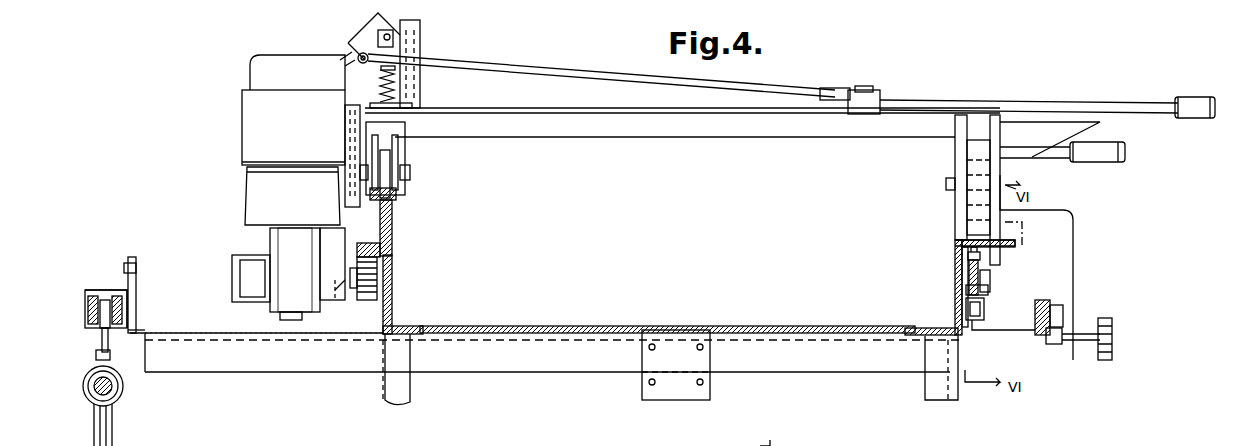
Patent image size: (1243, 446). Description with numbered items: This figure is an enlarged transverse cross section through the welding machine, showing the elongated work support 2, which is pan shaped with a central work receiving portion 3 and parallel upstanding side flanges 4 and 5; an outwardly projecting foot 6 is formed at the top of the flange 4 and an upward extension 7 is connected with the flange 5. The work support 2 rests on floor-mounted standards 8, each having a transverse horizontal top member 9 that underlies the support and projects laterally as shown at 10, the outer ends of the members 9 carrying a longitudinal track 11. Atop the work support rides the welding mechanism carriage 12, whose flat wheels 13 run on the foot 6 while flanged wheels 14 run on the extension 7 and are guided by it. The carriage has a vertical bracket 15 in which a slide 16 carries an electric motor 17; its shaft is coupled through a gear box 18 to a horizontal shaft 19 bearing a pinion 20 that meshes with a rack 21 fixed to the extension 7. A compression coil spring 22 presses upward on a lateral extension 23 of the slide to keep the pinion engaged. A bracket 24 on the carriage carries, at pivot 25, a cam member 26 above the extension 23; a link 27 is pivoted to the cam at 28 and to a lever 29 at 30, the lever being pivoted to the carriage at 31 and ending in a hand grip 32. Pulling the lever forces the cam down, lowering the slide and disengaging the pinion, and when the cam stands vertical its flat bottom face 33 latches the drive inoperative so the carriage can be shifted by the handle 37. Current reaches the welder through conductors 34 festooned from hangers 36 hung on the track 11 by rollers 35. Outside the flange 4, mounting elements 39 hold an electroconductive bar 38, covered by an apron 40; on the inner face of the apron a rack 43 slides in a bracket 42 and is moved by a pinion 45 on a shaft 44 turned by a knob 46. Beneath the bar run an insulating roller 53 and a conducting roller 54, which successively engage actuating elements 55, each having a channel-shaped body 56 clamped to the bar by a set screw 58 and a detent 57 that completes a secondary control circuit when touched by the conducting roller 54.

The work support 2 is at (962, 340).
The central work receiving portion 3 is at (612, 328).
The side flange 4 is at (960, 240).
The side flange 5 is at (392, 314).
The foot 6 is at (1020, 240).
The upward extension 7 is at (392, 217).
The standard 8 is at (390, 388).
The top member 9 is at (534, 366).
The lateral projection 10 is at (250, 366).
The track 11 is at (96, 288).
The carriage 12 is at (566, 112).
The flat wheel 13 is at (975, 166).
The flanged wheel 14 is at (398, 195).
The bracket 15 is at (352, 190).
The slide 16 is at (340, 218).
The electric motor 17 is at (252, 126).
The gear box 18 is at (270, 248).
The shaft 19 is at (342, 308).
The pinion 20 is at (378, 292).
The rack 21 is at (380, 254).
The compression coil spring 22 is at (400, 98).
The lateral extension 23 is at (400, 82).
The bracket 24 is at (420, 38).
The pivot 25 is at (378, 30).
The cam member 26 is at (347, 42).
The link 27 is at (612, 72).
The pivot 28 is at (358, 56).
The lever 29 is at (896, 92).
The pivot 30 is at (866, 86).
The pivot 31 is at (838, 88).
The hand grip 32 is at (1188, 98).
The flat bottom face 33 is at (345, 60).
The conductors 34 is at (118, 406).
The roller 35 is at (122, 312).
The hanger 36 is at (125, 386).
The handle 37 is at (1086, 162).
The bar 38 is at (988, 292).
The mounting element 39 is at (966, 279).
The apron 40 is at (1075, 224).
The bracket 42 is at (1050, 304).
The rack 43 is at (1062, 316).
The shaft 44 is at (1086, 342).
The pinion 45 is at (1050, 344).
The knob 46 is at (1114, 326).
The insulating roller 53 is at (966, 300).
The conducting roller 54 is at (988, 308).
The actuating element 55 is at (980, 264).
The channel-shaped body 56 is at (962, 262).
The detent 57 is at (990, 280).
The set screw 58 is at (965, 250).